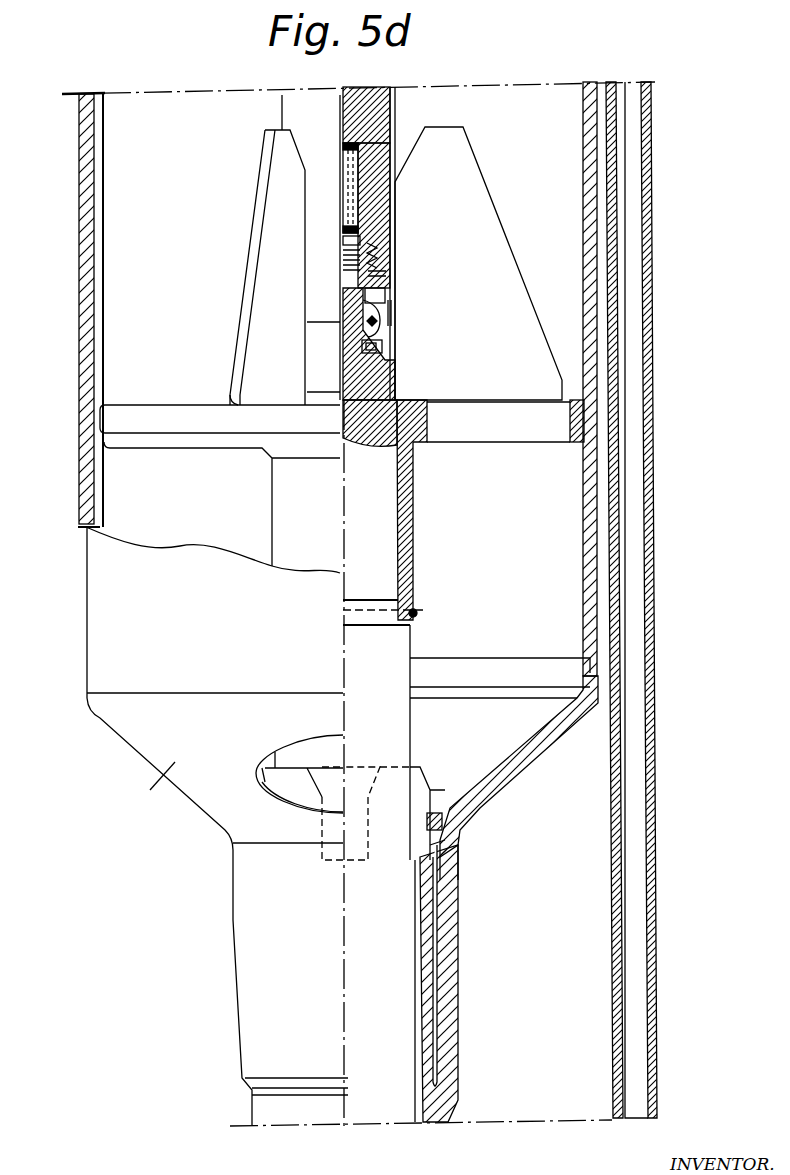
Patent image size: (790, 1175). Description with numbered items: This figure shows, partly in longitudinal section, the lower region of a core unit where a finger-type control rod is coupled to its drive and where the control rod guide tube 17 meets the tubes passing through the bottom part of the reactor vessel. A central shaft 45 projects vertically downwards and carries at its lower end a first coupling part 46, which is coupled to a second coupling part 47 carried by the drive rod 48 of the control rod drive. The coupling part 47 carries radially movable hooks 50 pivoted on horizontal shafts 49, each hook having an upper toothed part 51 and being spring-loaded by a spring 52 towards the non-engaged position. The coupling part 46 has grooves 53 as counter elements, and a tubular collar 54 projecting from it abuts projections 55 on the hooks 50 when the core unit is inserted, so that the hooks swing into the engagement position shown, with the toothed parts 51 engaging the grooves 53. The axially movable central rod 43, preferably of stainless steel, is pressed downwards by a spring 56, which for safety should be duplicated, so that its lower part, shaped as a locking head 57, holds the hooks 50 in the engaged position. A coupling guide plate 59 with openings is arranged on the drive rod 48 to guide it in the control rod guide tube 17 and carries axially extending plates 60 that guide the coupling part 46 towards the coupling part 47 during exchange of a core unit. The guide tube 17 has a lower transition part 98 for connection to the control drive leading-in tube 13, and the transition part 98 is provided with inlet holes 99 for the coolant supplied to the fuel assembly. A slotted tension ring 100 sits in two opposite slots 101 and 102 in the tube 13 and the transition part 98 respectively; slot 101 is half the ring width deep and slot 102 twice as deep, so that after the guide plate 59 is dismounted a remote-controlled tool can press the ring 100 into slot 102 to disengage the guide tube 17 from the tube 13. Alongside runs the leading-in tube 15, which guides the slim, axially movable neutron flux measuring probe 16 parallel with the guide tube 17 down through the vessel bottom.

The leading-in tube 13 is at (447, 1110).
The leading-in tube 15 is at (614, 1086).
The neutron flux measuring probe 16 is at (633, 1041).
The control rod guide tube 17 is at (585, 154).
The central rod 43 is at (378, 110).
The central shaft 45 is at (382, 130).
The first coupling part 46 is at (380, 208).
The second coupling part 47 is at (368, 398).
The drive rod 48 is at (375, 557).
The horizontal shaft 49 is at (363, 318).
The hook 50 is at (380, 294).
The toothed part 51 is at (374, 273).
The spring 52 is at (383, 350).
The groove 53 is at (373, 268).
The tubular collar 54 is at (391, 309).
The projection 55 is at (377, 323).
The spring 56 is at (352, 166).
The locking head 57 is at (348, 247).
The coupling guide plate 59 is at (482, 434).
The axially extending plate 60 is at (498, 254).
The transition part 98 is at (468, 815).
The inlet hole 99 is at (545, 748).
The slotted tension ring 100 is at (428, 822).
The slot 101 is at (432, 790).
The slot 102 is at (442, 845).